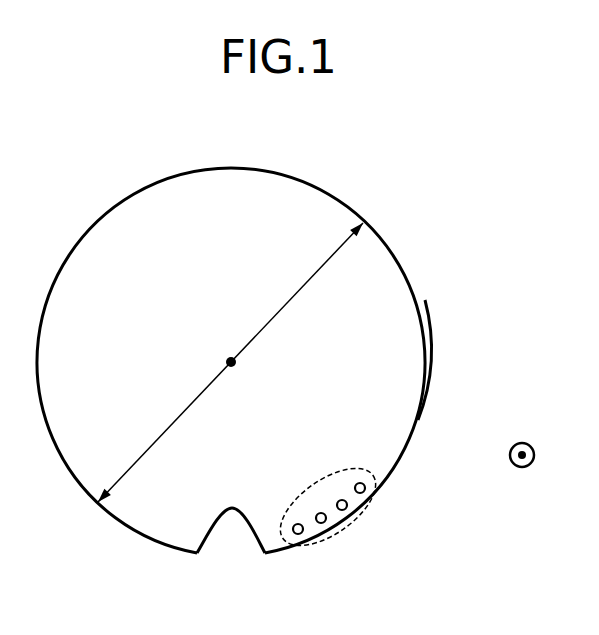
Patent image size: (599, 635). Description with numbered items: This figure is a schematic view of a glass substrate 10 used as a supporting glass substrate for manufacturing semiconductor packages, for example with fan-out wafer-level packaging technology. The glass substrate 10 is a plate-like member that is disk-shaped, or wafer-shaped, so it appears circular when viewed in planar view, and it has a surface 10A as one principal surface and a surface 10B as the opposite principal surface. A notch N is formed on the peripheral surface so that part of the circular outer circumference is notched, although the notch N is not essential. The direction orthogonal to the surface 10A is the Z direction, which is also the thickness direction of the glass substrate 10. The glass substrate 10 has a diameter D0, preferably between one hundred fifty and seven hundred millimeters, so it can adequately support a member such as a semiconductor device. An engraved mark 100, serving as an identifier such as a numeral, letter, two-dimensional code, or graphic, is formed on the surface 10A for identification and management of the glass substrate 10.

The glass substrate 10 is at (252, 390).
The surface 10A is at (413, 352).
The surface 10B is at (413, 398).
The mark 100 is at (362, 507).
The diameter D0 is at (333, 256).
The notch N is at (232, 540).
The Z direction Z is at (532, 455).